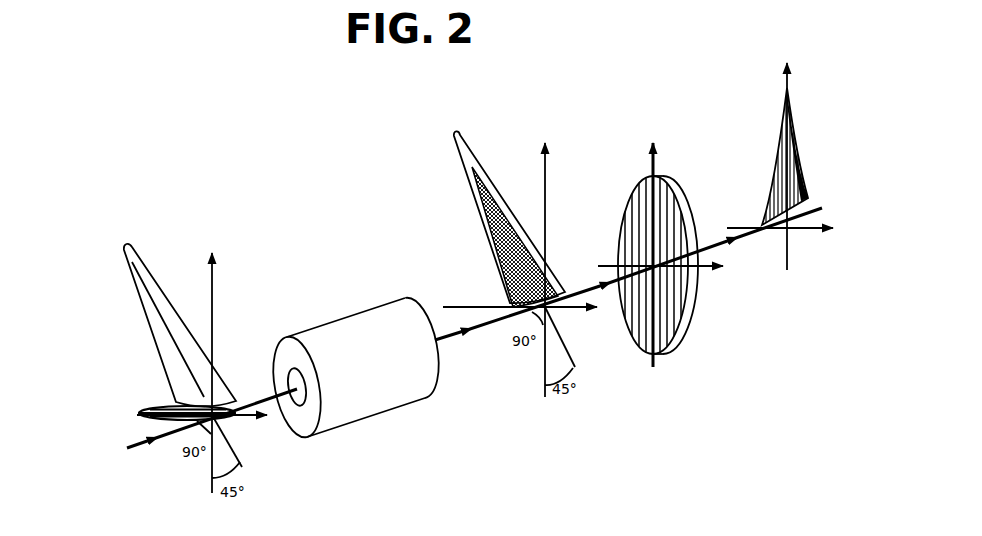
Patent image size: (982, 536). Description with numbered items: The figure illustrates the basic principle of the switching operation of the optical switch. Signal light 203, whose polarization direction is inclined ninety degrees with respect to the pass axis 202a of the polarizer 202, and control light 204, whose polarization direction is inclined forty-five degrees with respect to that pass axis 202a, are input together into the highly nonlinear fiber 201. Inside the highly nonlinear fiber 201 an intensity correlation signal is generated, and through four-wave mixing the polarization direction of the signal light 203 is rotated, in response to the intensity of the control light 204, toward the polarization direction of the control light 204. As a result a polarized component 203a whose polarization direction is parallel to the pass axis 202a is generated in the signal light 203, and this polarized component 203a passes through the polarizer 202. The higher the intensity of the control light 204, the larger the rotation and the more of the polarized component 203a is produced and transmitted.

The highly nonlinear fiber 201 is at (380, 308).
The polarizer 202 is at (690, 199).
The pass axis 202a is at (652, 172).
The signal light 203 is at (140, 412).
The polarized component 203a is at (800, 126).
The control light 204 is at (140, 298).